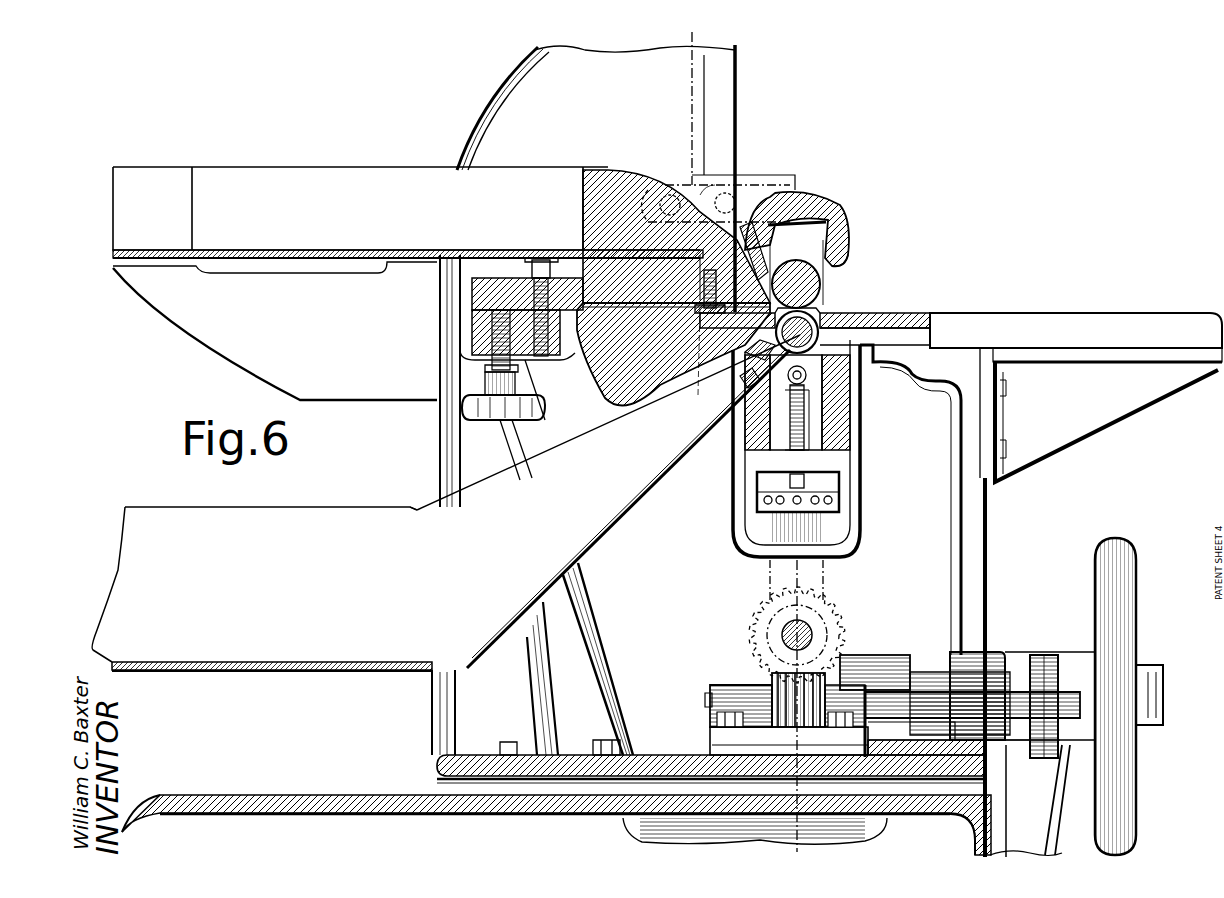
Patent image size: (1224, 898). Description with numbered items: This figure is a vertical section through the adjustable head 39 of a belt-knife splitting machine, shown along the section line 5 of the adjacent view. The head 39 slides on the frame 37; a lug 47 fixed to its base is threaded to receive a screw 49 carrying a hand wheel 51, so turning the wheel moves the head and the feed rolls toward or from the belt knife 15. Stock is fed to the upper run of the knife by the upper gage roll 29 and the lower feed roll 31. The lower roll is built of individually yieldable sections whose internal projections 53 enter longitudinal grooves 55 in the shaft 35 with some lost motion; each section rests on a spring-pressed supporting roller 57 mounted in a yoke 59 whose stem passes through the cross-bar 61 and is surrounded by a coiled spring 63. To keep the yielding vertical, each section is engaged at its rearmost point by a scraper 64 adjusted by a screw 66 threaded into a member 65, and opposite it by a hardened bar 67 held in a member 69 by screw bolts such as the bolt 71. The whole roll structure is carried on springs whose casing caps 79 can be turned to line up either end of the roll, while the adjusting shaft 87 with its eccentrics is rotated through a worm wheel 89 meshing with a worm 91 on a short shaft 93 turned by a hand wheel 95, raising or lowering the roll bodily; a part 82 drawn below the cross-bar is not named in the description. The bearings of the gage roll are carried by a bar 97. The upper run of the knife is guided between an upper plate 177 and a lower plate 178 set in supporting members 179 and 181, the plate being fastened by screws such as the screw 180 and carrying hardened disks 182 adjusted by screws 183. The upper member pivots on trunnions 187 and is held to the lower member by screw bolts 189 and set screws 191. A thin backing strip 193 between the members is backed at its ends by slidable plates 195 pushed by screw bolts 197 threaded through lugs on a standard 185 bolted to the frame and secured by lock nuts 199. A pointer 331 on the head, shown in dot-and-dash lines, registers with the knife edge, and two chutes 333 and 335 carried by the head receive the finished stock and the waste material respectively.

The section line 5— 5 is at (655, 38).
The belt knife 15 is at (742, 228).
The upper gage roll 29 is at (815, 200).
The lower feed roll 31 is at (848, 245).
The shaft 35 is at (925, 340).
The frame 37 is at (292, 795).
The head 39 is at (522, 50).
The lug 47 is at (880, 670).
The screw 49 is at (1000, 752).
The hand wheel 51 is at (1128, 545).
The internal projections 53 is at (805, 318).
The longitudinal grooves 55 is at (820, 318).
The spring-pressed supporting rollers 57 is at (870, 380).
The yoke 59 is at (868, 402).
The cross-bar 61 is at (866, 462).
The coiled spring 63 is at (868, 422).
The scraper 64 is at (752, 352).
The member 65 is at (745, 437).
The screw 66 is at (745, 380).
The hardened bar 67 is at (870, 362).
The member 69 is at (866, 444).
The screw bolt 71 is at (870, 348).
The cap 79 is at (855, 497).
The block 82 is at (757, 467).
The adjusting shaft 87 is at (840, 742).
The worm wheel 89 is at (810, 663).
The worm 91 is at (767, 723).
The short shaft 93 is at (965, 705).
The hand wheel 95 is at (1045, 665).
The bar 97 is at (832, 210).
The upper plate 177 is at (690, 250).
The lower plate 178 is at (698, 395).
The upper supporting member 179 is at (598, 170).
The screw 180 is at (748, 262).
The lower supporting member 181 is at (612, 410).
The hardened disk 182 is at (708, 250).
The screws 183 is at (705, 180).
The standard 185 is at (505, 688).
The trunnions 187 is at (650, 250).
The screw bolts 189 is at (535, 260).
The set screws 191 is at (490, 340).
The backing strip 193 is at (660, 360).
The slidable plates 195 is at (575, 360).
The screw bolts 197 is at (475, 292).
The lock nuts 199 is at (478, 300).
The pointer 331 is at (775, 195).
The chute 333 is at (268, 165).
The chute 335 is at (175, 525).